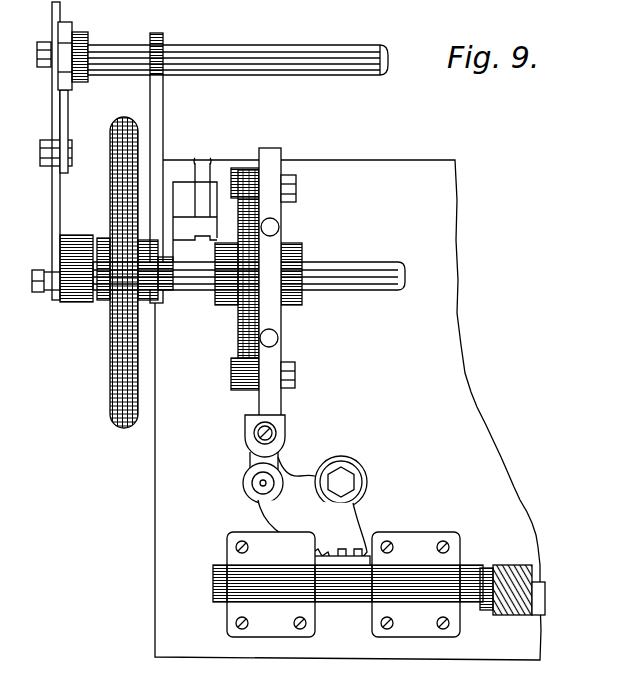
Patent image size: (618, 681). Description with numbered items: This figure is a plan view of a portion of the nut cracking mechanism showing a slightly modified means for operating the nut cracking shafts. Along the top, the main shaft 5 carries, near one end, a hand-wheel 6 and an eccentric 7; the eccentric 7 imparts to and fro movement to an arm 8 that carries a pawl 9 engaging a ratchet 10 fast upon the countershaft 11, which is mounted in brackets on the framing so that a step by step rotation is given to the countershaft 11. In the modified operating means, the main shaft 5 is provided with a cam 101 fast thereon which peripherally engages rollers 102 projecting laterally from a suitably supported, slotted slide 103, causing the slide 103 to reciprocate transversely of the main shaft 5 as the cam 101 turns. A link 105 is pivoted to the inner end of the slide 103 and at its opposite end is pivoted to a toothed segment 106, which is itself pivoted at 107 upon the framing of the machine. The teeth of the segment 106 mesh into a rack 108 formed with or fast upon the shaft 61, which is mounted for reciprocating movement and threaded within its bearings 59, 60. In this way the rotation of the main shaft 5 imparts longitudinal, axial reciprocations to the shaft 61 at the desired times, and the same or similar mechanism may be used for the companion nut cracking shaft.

The main shaft 5 is at (342, 265).
The hand-wheel 6 is at (110, 357).
The eccentric 7 is at (82, 296).
The arm 8 is at (60, 201).
The pawl 9 is at (65, 122).
The ratchet 10 is at (68, 31).
The countershaft 11 is at (245, 53).
The bearing 59 is at (235, 610).
The bearing 60 is at (453, 617).
The shaft 61 is at (468, 577).
The cam 101 is at (238, 335).
The rollers 102 is at (243, 176).
The slide 103 is at (271, 353).
The link 105 is at (274, 457).
The toothed segment 106 is at (350, 530).
The pivot 107 is at (344, 479).
The rack 108 is at (345, 568).